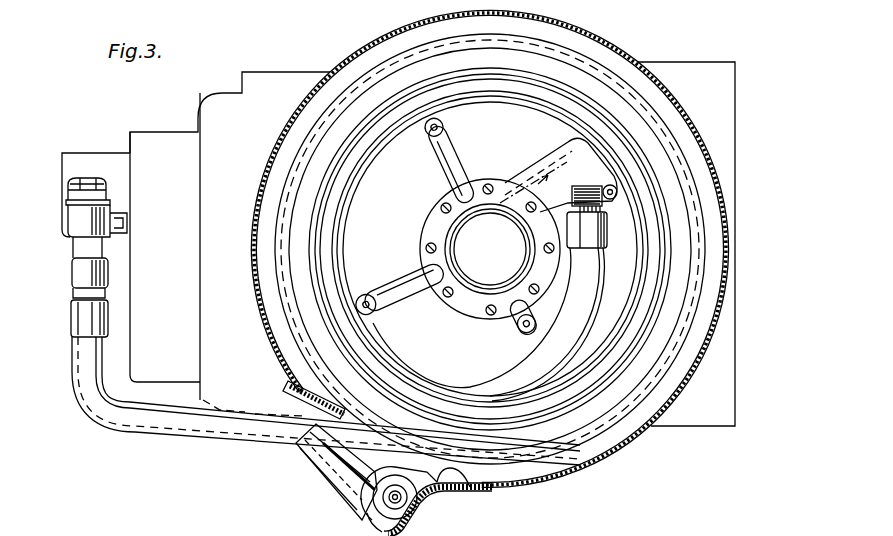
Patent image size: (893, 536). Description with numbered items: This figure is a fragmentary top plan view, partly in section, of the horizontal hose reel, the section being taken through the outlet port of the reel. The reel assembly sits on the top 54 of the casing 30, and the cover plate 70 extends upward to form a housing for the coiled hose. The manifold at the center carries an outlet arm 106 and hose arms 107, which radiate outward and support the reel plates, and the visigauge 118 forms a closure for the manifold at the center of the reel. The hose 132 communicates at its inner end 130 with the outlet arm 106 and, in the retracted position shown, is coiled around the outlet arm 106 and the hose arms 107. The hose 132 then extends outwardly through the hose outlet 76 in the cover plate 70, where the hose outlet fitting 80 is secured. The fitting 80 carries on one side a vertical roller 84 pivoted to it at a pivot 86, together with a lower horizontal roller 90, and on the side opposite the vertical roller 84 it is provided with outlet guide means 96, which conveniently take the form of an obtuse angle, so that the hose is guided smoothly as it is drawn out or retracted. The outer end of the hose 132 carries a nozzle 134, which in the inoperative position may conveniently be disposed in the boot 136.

The casing 30 is at (705, 427).
The top of the casing 54 is at (735, 146).
The cover plate 70 is at (724, 233).
The hose outlet 76 is at (484, 484).
The hose outlet fitting 80 is at (437, 507).
The vertical roller 84 is at (377, 505).
The pivot of vertical roller 86 is at (393, 500).
The lower horizontal roller 90 is at (335, 462).
The outlet guide means 96 is at (288, 383).
The outlet arm 106 is at (558, 165).
The hose arms 107 is at (440, 136).
The visigauge 118 is at (468, 237).
The inner end of the hose 130 is at (590, 220).
The hose 132 is at (590, 300).
The nozzle 134 is at (72, 261).
The boot 136 is at (62, 153).